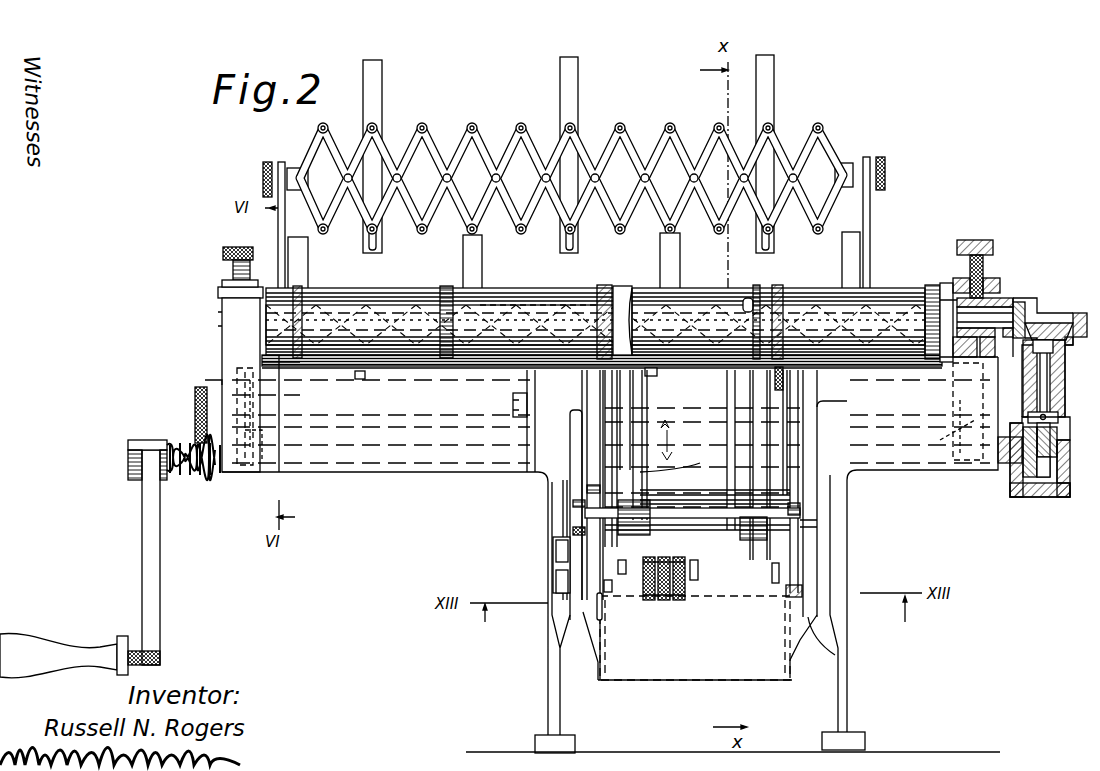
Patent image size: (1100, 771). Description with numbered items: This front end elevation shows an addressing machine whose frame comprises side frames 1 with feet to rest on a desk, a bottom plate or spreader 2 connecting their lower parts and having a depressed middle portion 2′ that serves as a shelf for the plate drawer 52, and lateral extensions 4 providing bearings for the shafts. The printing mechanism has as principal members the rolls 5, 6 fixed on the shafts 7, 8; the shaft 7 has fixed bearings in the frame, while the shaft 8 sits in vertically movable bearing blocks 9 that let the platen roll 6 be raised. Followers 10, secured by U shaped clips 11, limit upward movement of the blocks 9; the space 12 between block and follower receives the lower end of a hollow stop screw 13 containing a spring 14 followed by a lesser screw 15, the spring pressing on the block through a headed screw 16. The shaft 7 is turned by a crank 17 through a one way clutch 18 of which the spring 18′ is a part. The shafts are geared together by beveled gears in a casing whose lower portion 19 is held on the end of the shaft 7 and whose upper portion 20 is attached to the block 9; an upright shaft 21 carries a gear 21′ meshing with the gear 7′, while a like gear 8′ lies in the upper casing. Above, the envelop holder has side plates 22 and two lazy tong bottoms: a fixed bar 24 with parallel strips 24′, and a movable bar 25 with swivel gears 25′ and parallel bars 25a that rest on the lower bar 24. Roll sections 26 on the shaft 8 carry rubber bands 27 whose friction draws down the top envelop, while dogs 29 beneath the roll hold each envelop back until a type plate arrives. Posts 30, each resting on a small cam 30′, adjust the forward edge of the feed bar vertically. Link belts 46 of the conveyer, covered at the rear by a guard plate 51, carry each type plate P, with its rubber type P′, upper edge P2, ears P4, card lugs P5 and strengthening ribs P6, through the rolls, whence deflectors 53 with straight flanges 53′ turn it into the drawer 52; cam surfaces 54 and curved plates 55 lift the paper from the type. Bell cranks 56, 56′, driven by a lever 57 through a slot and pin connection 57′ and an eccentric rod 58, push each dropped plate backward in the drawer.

The side frames 1 is at (548, 683).
The bottom plate or spreader 2 is at (786, 682).
The depressed middle portion 2′ is at (687, 665).
The lateral extensions 4 is at (232, 350).
The printing roll 5 is at (702, 458).
The platen roll 6 is at (692, 292).
The shaft 7 is at (1005, 455).
The beveled gear 7′ is at (1045, 465).
The shaft 8 is at (1022, 302).
The beveled gear 8′ is at (1040, 312).
The bearing blocks 9 is at (1000, 318).
The followers 10 is at (1002, 294).
The U shaped clips 11 is at (222, 293).
The space 12 is at (960, 316).
The stop screw 13 is at (233, 260).
The spring 14 is at (984, 250).
The lesser screw 15 is at (972, 240).
The headed screw 16 is at (956, 280).
The crank 17 is at (160, 585).
The one way clutch 18 is at (128, 462).
The spring 18′ is at (175, 440).
The lower casing portion 19 is at (1009, 352).
The upper casing portion 20 is at (1055, 322).
The upright shaft 21 is at (1062, 392).
The beveled gear 21′ is at (1062, 442).
The wings or side plates 22 is at (285, 238).
The fixed lazy tong bar 24 is at (497, 300).
The parallel strips 24′ is at (300, 272).
The movable lazy tong bar 25 is at (488, 140).
The parallel bars 25a is at (378, 110).
The swivel gears 25′ is at (293, 173).
The roll sections 26 is at (322, 300).
The rubber bands 27 is at (604, 286).
The stop-and-release dogs 29 is at (760, 374).
The posts 30 is at (610, 419).
The cam 30′ is at (252, 405).
The link belts 46 is at (784, 380).
The guard plate 51 is at (742, 542).
The plate drawer 52 is at (635, 652).
The curved deflectors 53 is at (800, 485).
The straight flange 53′ is at (775, 462).
The cam surface 54 is at (527, 380).
The curved plates 55 is at (333, 368).
The bell crank 56 is at (568, 548).
The bell crank 56′ is at (800, 560).
The lever 57 is at (587, 488).
The slot and pin connection 57′ is at (573, 503).
The eccentric rod 58 is at (573, 530).
The type plate P is at (678, 575).
The type P′ is at (690, 590).
The upper edge P2 is at (623, 559).
The ears P4 is at (603, 614).
The lugs P5 is at (775, 585).
The struck up ribs P6 is at (612, 600).